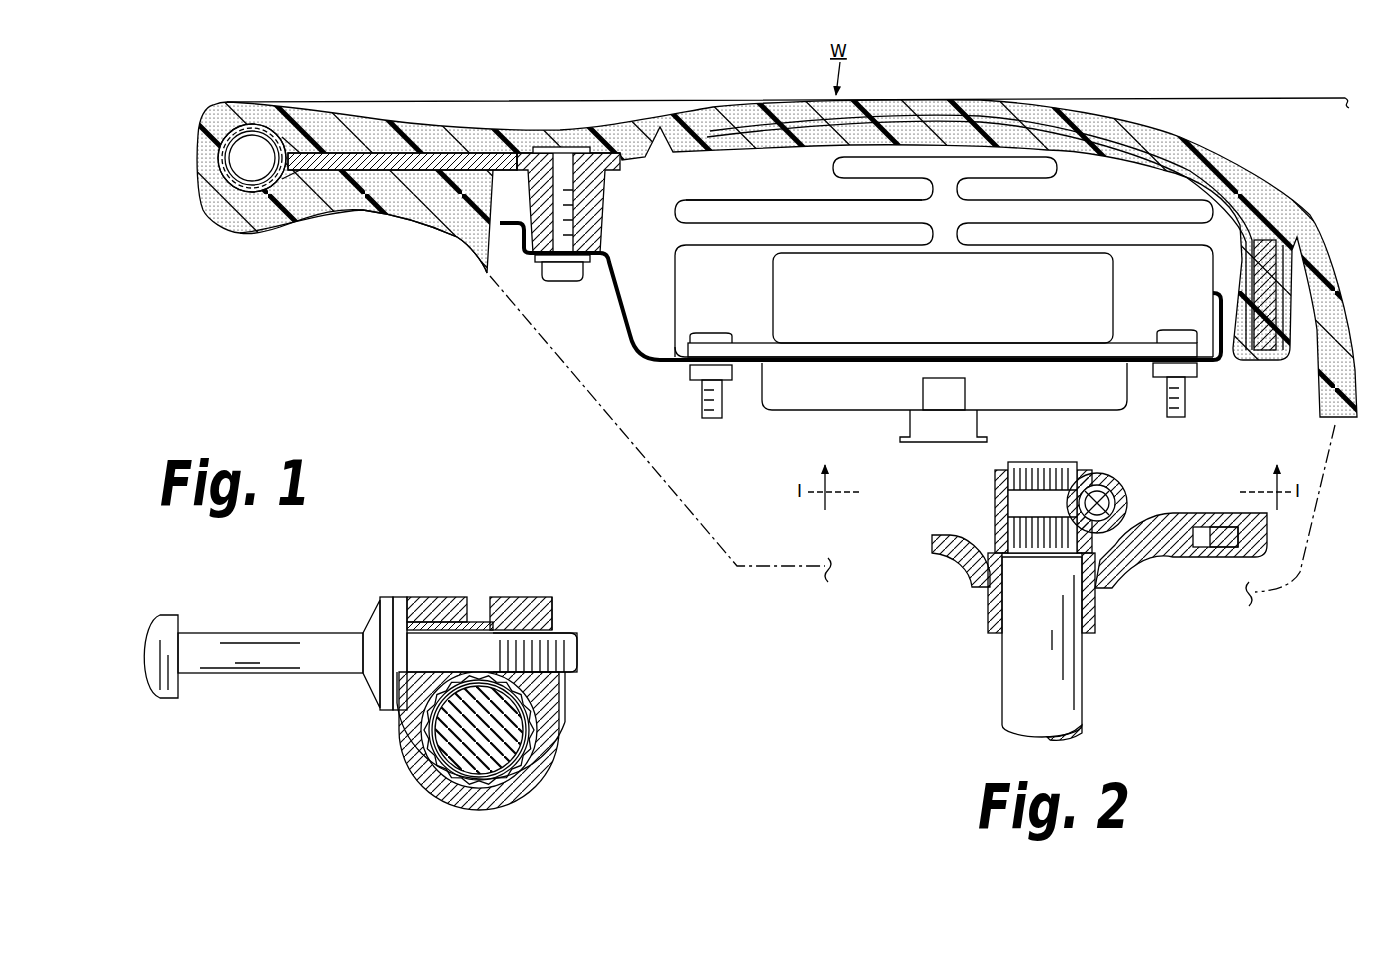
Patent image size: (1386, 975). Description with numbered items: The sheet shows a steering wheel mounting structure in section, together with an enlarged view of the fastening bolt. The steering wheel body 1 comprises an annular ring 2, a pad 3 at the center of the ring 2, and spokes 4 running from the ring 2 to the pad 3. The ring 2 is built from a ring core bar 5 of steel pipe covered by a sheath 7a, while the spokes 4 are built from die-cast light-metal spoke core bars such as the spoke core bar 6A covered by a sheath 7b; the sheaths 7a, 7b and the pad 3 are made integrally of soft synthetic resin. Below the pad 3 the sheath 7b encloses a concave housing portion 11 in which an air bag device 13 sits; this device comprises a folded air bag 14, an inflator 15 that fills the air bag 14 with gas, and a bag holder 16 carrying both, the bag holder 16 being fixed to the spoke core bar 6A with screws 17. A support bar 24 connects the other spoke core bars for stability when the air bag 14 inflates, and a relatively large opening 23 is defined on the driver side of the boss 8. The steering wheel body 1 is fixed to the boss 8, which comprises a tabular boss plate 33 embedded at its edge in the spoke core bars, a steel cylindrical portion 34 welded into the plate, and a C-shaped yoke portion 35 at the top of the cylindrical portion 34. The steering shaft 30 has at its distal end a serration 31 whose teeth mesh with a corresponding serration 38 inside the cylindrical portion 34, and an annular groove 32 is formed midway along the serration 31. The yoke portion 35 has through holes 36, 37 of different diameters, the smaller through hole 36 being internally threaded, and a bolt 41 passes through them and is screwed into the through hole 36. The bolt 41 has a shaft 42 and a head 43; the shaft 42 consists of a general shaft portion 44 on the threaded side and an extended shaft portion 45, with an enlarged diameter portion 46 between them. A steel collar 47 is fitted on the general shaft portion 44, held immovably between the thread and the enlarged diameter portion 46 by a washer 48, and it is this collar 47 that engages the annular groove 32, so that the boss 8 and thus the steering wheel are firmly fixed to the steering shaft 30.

In FIG. 1, the steering wheel body 1 is at (545, 96).
In FIG. 1, the annular ring 2 is at (232, 107).
In FIG. 1, the pad 3 is at (1017, 104).
In FIG. 1, the spoke 4 is at (396, 216).
In FIG. 1, the ring core bar 5 is at (214, 146).
In FIG. 1, the spoke core bar 6A is at (334, 172).
In FIG. 1, the sheath 7a is at (212, 205).
In FIG. 1, the sheath 7b is at (447, 227).
In FIG. 2, the boss 8 is at (1118, 590).
In FIG. 1, the concave housing portion 11 is at (944, 285).
In FIG. 1, the air bag device 13 is at (802, 430).
In FIG. 1, the air bag 14 is at (710, 200).
In FIG. 1, the inflator 15 is at (773, 286).
In FIG. 1, the bag holder 16 is at (627, 337).
In FIG. 1, the screw 17 is at (558, 270).
In FIG. 1, the opening 23 is at (645, 472).
In FIG. 1, the support bar 24 is at (1262, 342).
In FIG. 1, the steering shaft 30 is at (490, 778).
In FIG. 2, the steering shaft 30 is at (1085, 713).
In FIG. 1, the serration 31 is at (527, 775).
In FIG. 2, the serration 31 is at (1020, 537).
In FIG. 1, the annular groove 32 is at (473, 780).
In FIG. 2, the annular groove 32 is at (1035, 485).
In FIG. 2, the boss plate 33 is at (955, 563).
In FIG. 1, the cylindrical portion 34 is at (570, 746).
In FIG. 2, the cylindrical portion 34 is at (1095, 632).
In FIG. 1, the yoke portion 35 is at (562, 703).
In FIG. 2, the yoke portion 35 is at (1112, 478).
In FIG. 1, the through hole 36 is at (538, 635).
In FIG. 1, the through hole 37 is at (413, 622).
In FIG. 2, the through hole 37 is at (1110, 506).
In FIG. 1, the serration 38 is at (440, 776).
In FIG. 1, the bolt 41 is at (283, 618).
In FIG. 2, the bolt 41 is at (1097, 503).
In FIG. 1, the shaft 42 is at (497, 537).
In FIG. 1, the head 43 is at (176, 616).
In FIG. 1, the general shaft portion 44 is at (485, 633).
In FIG. 2, the general shaft portion 44 is at (1117, 495).
In FIG. 1, the extended shaft portion 45 is at (348, 630).
In FIG. 1, the enlarged diameter portion 46 is at (353, 664).
In FIG. 1, the collar 47 is at (452, 625).
In FIG. 2, the collar 47 is at (1090, 488).
In FIG. 1, the washer 48 is at (400, 708).